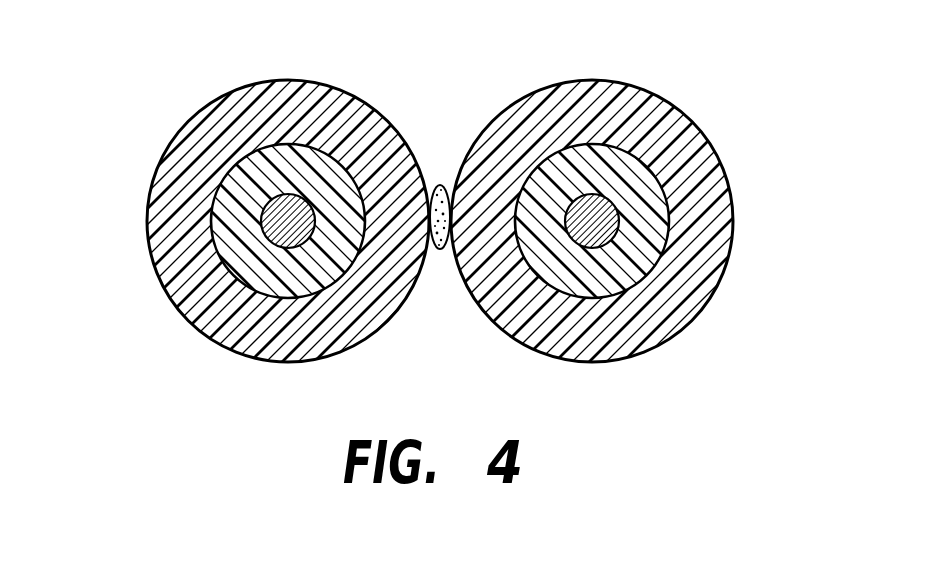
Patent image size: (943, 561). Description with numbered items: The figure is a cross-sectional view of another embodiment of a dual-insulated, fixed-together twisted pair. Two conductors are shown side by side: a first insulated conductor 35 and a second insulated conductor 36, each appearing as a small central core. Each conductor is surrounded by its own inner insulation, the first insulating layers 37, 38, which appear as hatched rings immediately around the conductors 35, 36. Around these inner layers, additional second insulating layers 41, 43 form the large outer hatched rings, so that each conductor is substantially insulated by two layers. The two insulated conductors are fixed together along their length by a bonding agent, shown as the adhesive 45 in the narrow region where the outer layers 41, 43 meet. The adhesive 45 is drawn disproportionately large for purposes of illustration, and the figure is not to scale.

The second insulating layer 41 is at (280, 122).
The first insulating layer 37 is at (275, 265).
The first insulated conductor 35 is at (287, 219).
The second insulating layer 43 is at (660, 290).
The first insulating layer 38 is at (597, 185).
The second insulated conductor 36 is at (596, 213).
The adhesive 45 is at (439, 187).